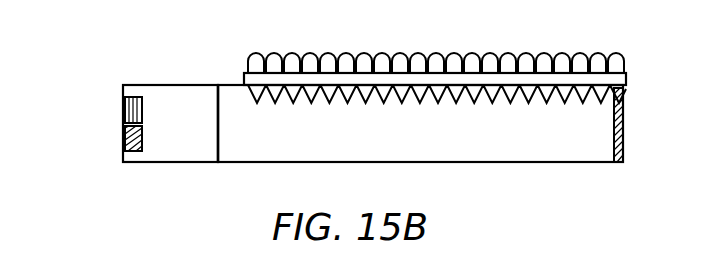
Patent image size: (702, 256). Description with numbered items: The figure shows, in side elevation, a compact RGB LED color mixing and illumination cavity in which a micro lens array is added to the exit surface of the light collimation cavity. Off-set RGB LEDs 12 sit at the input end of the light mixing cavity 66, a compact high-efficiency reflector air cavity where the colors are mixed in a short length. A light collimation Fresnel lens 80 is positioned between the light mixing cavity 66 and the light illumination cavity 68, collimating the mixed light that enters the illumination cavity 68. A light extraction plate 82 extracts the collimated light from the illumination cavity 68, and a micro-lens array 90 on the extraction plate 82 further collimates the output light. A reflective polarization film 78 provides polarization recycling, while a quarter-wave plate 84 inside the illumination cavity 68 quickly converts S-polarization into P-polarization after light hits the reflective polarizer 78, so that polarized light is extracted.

The RGB LEDs 12 is at (123, 112).
The light mixing cavity 66 is at (170, 123).
The light illumination cavity 68 is at (420, 123).
The reflective polarization film 78 is at (500, 80).
The light collimation Fresnel lens 80 is at (217, 101).
The light extraction plate 82 is at (473, 90).
The quarter-wave plate 84 is at (621, 115).
The micro-lens array 90 is at (418, 52).